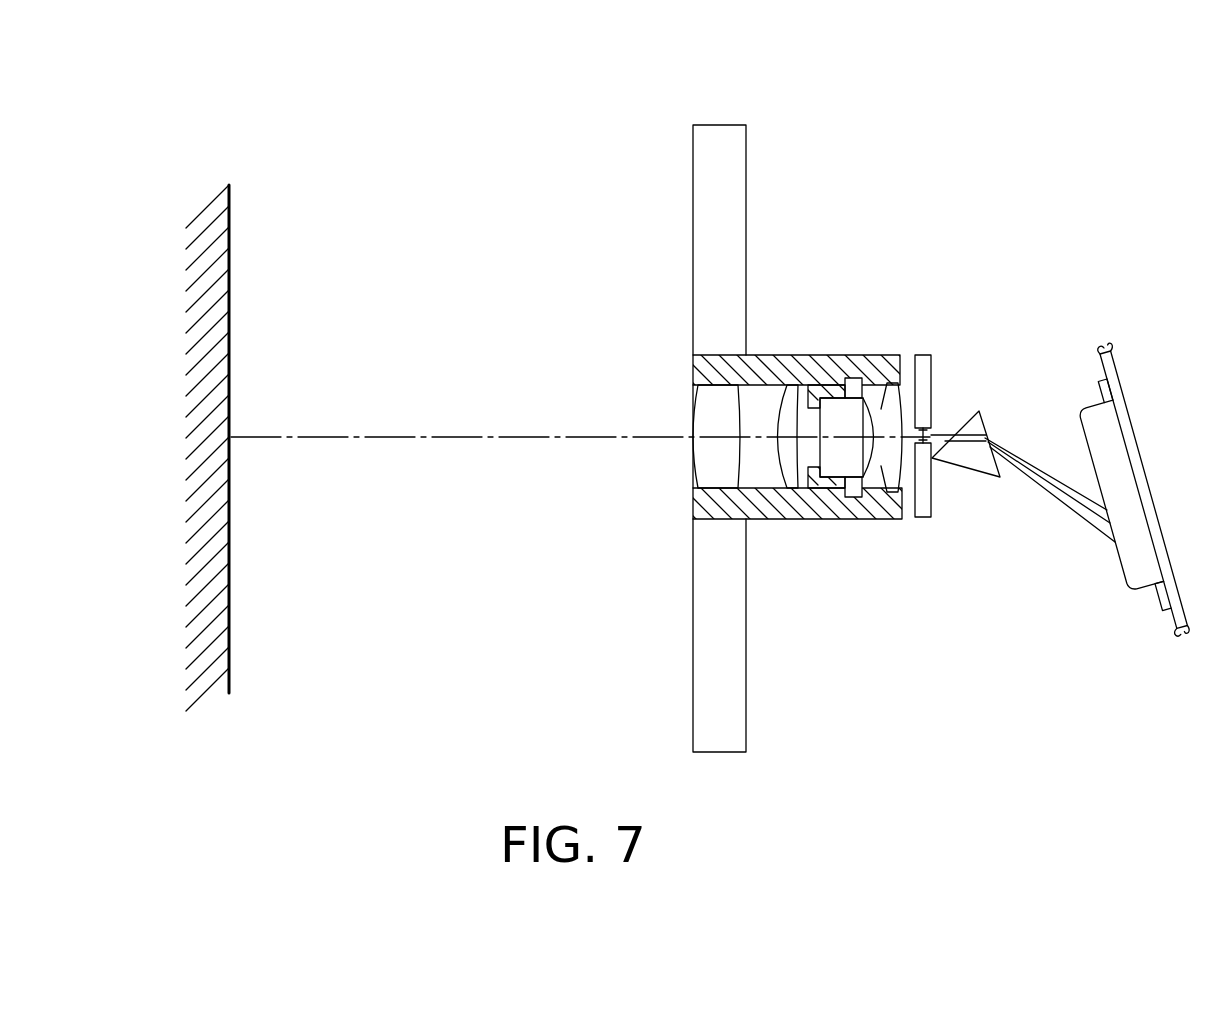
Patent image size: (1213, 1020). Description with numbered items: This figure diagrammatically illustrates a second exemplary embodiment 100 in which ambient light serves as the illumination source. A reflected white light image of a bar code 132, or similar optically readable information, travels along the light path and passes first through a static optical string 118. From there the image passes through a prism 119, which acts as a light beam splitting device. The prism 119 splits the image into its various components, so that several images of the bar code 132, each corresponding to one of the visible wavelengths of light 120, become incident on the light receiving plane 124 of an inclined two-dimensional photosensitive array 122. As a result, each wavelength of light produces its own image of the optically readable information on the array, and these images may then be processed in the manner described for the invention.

The second exemplary embodiment 100 is at (526, 128).
The bar code 132 is at (231, 353).
The static optical string 118 is at (803, 519).
The prism 119 is at (974, 410).
The visible wavelengths of light 120 is at (1077, 517).
The light receiving plane 124 is at (1087, 453).
The two-dimensional photosensitive array 122 is at (1140, 567).